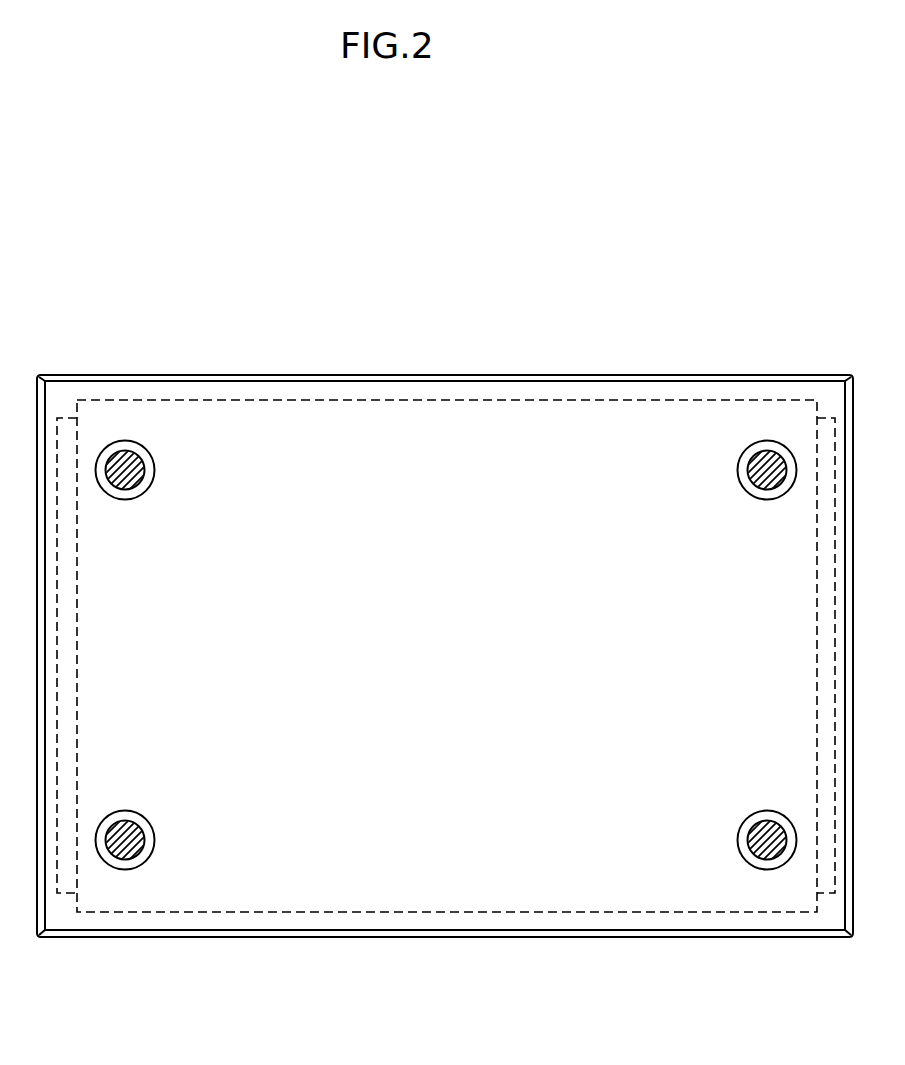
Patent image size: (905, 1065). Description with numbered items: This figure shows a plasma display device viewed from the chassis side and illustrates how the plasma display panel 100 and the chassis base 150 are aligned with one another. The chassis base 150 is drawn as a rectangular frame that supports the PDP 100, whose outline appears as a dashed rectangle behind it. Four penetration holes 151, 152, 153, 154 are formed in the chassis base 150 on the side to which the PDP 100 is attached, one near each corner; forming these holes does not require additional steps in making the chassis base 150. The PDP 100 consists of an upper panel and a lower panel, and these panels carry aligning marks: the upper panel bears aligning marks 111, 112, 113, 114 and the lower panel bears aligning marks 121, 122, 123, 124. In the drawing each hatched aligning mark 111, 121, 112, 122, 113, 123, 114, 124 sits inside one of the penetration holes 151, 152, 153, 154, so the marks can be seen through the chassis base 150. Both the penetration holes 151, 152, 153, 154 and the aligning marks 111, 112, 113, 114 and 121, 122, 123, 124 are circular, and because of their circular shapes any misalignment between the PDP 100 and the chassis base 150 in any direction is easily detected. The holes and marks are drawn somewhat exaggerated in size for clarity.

The plasma display panel 100 is at (436, 400).
The chassis base 150 is at (591, 375).
The aligning mark 111 is at (174, 473).
The aligning mark 121 is at (137, 467).
The aligning mark 112 is at (722, 473).
The aligning mark 122 is at (755, 467).
The aligning mark 113 is at (175, 844).
The aligning mark 123 is at (140, 845).
The aligning mark 114 is at (722, 844).
The aligning mark 124 is at (752, 845).
The penetration hole 151 is at (139, 494).
The penetration hole 152 is at (753, 494).
The penetration hole 153 is at (138, 817).
The penetration hole 154 is at (754, 817).